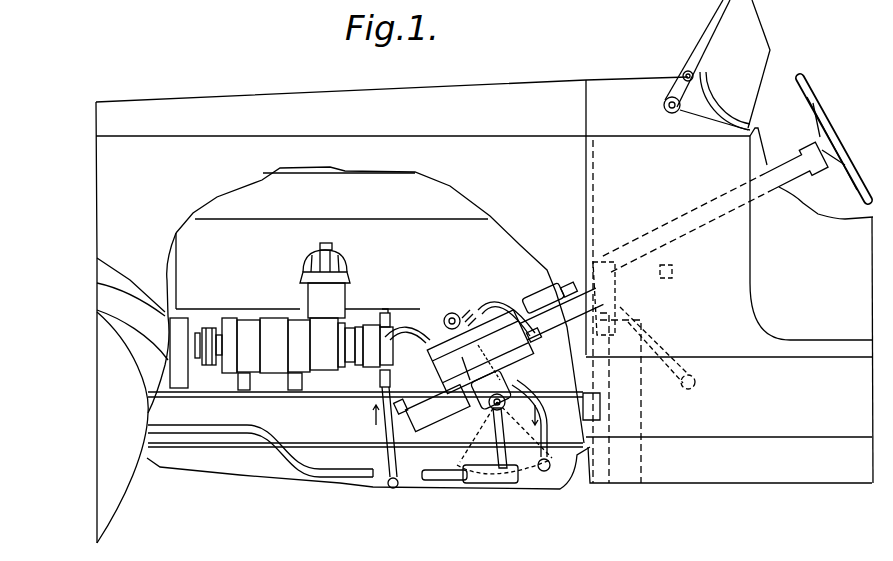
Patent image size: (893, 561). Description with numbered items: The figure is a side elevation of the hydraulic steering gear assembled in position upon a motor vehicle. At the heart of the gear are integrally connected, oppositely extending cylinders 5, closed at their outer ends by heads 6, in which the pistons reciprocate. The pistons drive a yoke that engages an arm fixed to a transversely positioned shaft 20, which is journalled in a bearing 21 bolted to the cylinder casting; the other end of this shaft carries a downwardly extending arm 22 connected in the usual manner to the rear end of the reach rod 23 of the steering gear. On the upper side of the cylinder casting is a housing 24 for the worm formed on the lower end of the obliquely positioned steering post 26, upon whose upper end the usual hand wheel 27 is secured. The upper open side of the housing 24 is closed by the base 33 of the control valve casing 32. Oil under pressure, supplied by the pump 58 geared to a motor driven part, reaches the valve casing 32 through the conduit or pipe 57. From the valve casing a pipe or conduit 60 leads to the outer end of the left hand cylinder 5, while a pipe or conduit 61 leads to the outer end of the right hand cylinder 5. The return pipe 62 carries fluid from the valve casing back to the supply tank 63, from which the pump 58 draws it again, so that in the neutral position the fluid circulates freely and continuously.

The cylinders 5 is at (537, 357).
The heads 6 is at (553, 332).
The shaft 20 is at (495, 410).
The bearing 21 is at (489, 391).
The downwardly extending arm 22 is at (495, 455).
The reach rod 23 is at (352, 475).
The housing 24 is at (485, 352).
The steering post 26 is at (800, 165).
The hand wheel 27 is at (817, 113).
The control valve casing 32 is at (453, 313).
The base 33 is at (455, 362).
The conduit or pipe 57 is at (393, 345).
The pump 58 is at (341, 322).
The pipe or conduit 60 is at (497, 300).
The pipe or conduit 61 is at (418, 395).
The return pipe 62 is at (546, 422).
The supply tank 63 is at (553, 478).